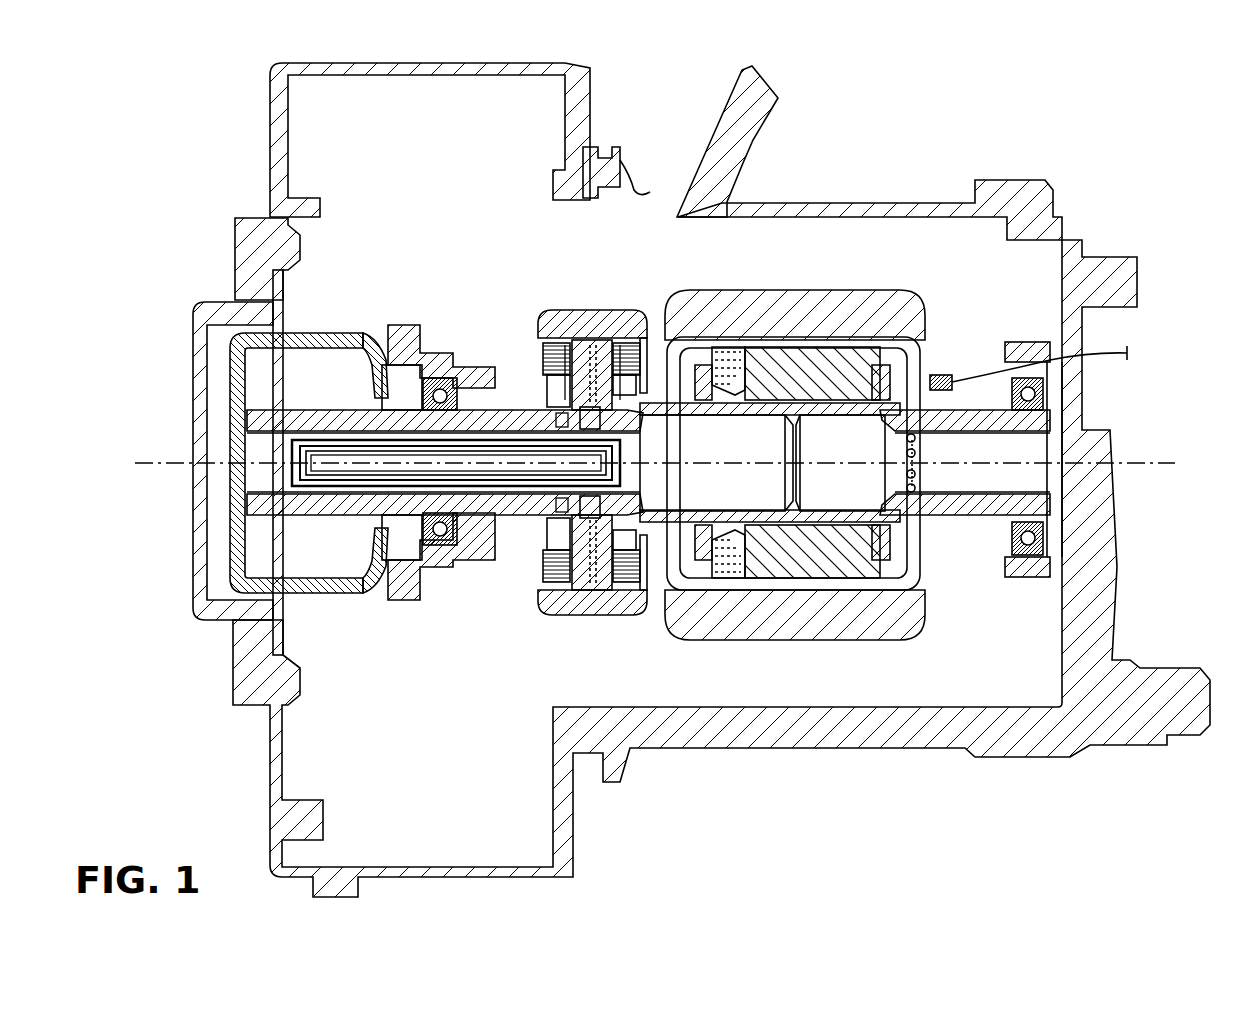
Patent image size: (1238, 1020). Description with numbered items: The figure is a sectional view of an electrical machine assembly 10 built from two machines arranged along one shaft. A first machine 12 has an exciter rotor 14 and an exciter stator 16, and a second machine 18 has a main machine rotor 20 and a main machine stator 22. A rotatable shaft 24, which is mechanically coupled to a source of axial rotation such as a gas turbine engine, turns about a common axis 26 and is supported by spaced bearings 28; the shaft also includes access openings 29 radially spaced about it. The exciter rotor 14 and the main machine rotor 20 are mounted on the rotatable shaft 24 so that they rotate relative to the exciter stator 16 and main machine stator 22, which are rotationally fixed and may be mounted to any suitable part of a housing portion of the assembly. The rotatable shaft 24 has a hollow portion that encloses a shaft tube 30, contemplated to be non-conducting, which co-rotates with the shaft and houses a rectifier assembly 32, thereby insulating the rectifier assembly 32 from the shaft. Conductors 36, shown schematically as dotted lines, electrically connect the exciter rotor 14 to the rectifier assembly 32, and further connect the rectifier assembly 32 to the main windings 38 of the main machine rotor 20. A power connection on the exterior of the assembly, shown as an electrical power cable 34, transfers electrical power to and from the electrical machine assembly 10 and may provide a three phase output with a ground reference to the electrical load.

The electrical machine assembly 10 is at (906, 111).
The first machine 12 is at (648, 355).
The exciter rotor 14 is at (583, 340).
The exciter stator 16 is at (598, 365).
The second machine 18 is at (925, 540).
The main machine rotor 20 is at (818, 360).
The main machine stator 22 is at (848, 625).
The rotatable shaft 24 is at (277, 488).
The common axis 26 is at (671, 463).
The spaced bearings 28 is at (432, 528).
The access openings 29 is at (568, 418).
The shaft tube 30 is at (283, 445).
The rectifier assembly 32 is at (298, 452).
The electrical power cable 34 is at (945, 373).
The conductors 36 is at (545, 372).
The main windings 38 is at (730, 380).